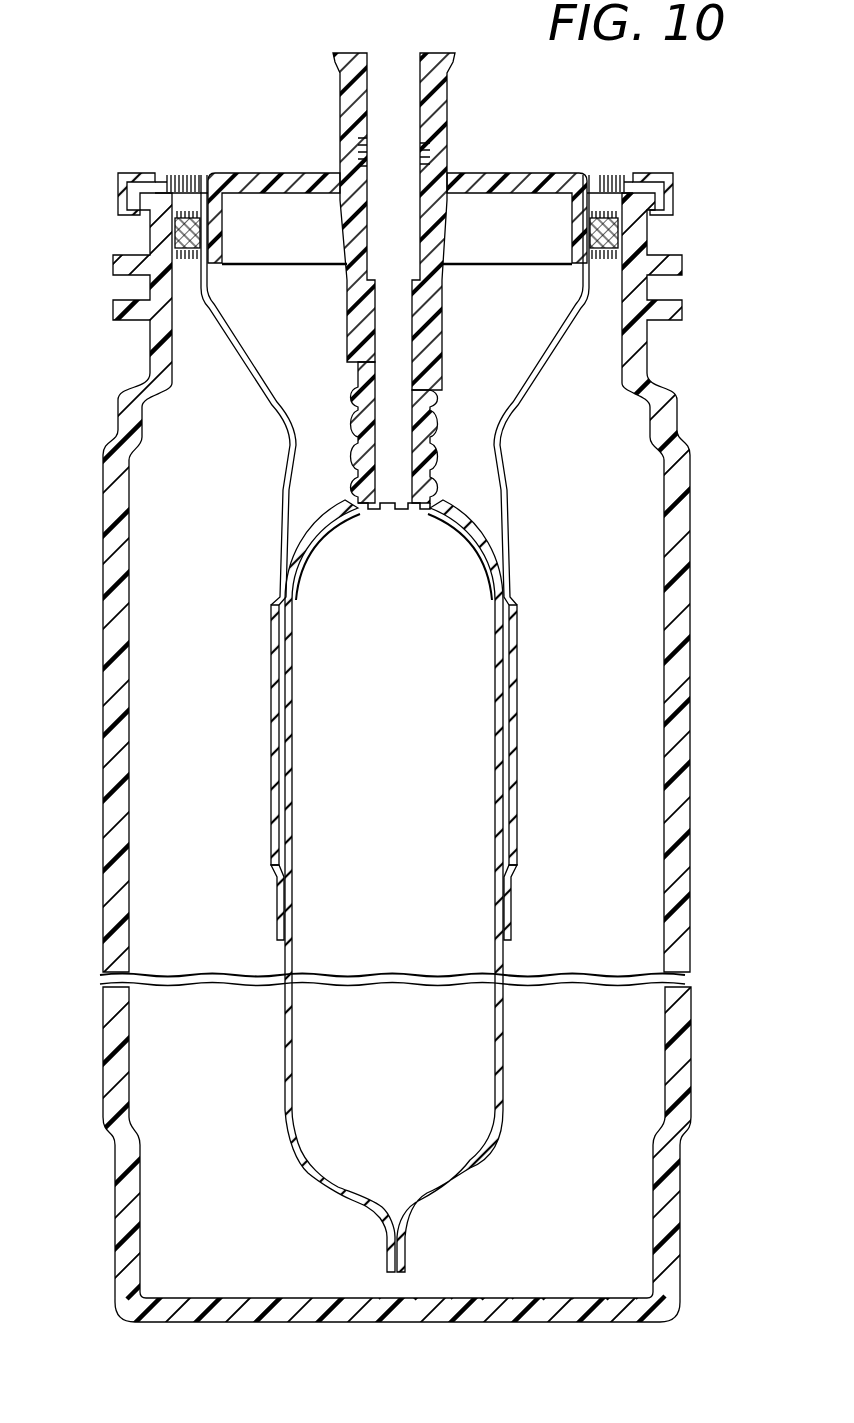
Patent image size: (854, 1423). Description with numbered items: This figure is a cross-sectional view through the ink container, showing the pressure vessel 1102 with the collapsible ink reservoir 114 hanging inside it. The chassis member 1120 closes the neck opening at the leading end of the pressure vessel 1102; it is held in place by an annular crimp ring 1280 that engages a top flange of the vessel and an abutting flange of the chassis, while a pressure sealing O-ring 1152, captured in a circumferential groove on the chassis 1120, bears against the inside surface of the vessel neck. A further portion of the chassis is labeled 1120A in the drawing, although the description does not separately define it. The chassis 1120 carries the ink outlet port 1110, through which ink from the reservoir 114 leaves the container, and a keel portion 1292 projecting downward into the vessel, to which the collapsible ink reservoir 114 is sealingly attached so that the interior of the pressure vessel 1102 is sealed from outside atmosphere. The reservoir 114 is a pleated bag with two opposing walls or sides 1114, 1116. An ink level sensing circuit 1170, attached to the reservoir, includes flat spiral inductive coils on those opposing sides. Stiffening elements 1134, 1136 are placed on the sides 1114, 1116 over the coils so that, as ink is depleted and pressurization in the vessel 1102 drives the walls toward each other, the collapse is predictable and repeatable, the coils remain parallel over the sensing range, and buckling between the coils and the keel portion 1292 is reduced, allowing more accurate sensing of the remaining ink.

The pressure vessel 1102 is at (97, 880).
The chassis member 1120 is at (475, 128).
The cap skirt flange 1120A is at (163, 237).
The annular crimp ring 1280 is at (650, 173).
The pressure sealing O-ring 1152 is at (615, 235).
The ink outlet port 1110 is at (447, 92).
The keel portion 1292 is at (425, 370).
The ink level sensing circuit 1170 is at (242, 375).
The stiffening element 1134 is at (271, 808).
The stiffening element 1136 is at (517, 803).
The opposing wall or side 1114 is at (277, 948).
The opposing wall or side 1116 is at (511, 957).
The collapsible ink reservoir 114 is at (273, 1112).